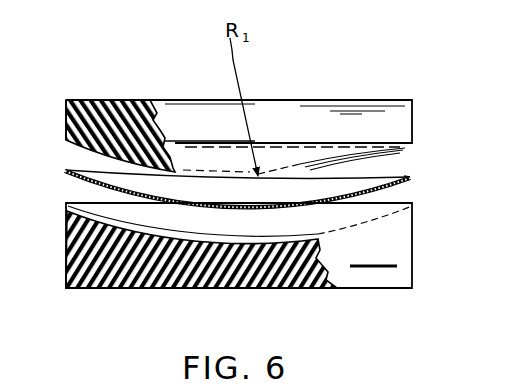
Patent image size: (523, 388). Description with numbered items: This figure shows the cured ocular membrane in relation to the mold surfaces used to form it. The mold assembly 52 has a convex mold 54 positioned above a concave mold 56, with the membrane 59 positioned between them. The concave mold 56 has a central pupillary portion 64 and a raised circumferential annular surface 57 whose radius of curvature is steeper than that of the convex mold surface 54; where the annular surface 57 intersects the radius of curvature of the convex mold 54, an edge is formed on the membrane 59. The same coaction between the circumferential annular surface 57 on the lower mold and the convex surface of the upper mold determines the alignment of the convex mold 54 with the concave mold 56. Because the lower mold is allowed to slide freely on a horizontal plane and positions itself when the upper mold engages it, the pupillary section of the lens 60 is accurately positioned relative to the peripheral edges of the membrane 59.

The mold assembly 52 is at (276, 175).
The convex mold 54 is at (288, 112).
The concave mold 56 is at (268, 245).
The circumferential annular surface 57 is at (412, 208).
The membrane 59 is at (416, 173).
The lens 60 is at (231, 216).
The central pupillary portion 64 is at (257, 247).